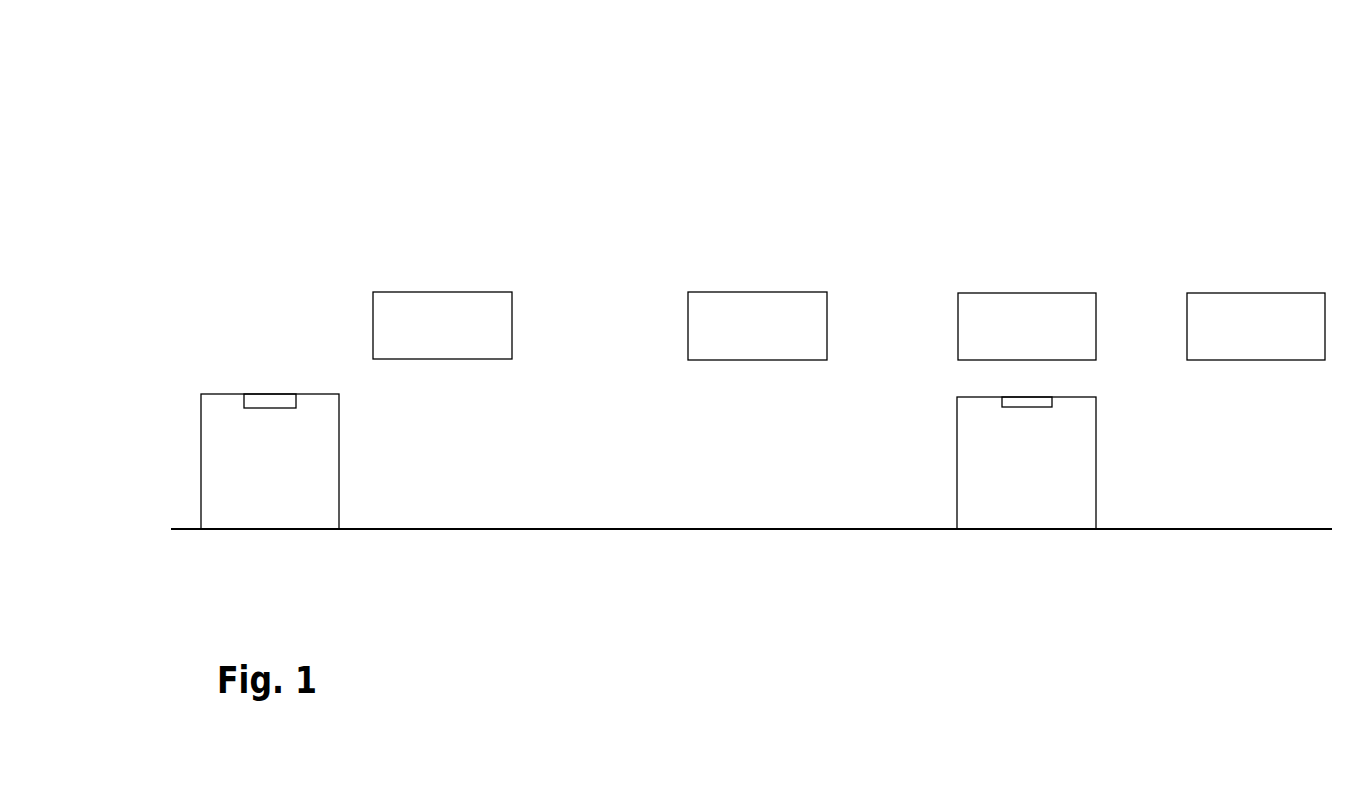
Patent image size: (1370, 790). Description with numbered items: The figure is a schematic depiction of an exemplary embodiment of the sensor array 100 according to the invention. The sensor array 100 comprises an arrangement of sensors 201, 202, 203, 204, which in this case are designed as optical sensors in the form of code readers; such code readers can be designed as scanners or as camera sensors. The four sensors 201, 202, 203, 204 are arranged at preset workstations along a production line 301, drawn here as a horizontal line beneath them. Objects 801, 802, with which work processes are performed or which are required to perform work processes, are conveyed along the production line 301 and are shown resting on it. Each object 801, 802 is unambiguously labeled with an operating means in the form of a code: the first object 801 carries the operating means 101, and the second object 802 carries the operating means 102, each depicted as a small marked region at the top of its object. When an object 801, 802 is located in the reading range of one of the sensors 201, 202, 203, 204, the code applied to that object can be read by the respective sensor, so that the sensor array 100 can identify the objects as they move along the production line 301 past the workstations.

The sensor array 100 is at (1113, 65).
The operating means 101 is at (269, 400).
The operating means 102 is at (1025, 401).
The sensor 201 is at (465, 337).
The sensor 202 is at (780, 337).
The sensor 203 is at (1050, 337).
The sensor 204 is at (1279, 337).
The production line 301 is at (1330, 524).
The object 801 is at (287, 482).
The object 802 is at (1045, 482).